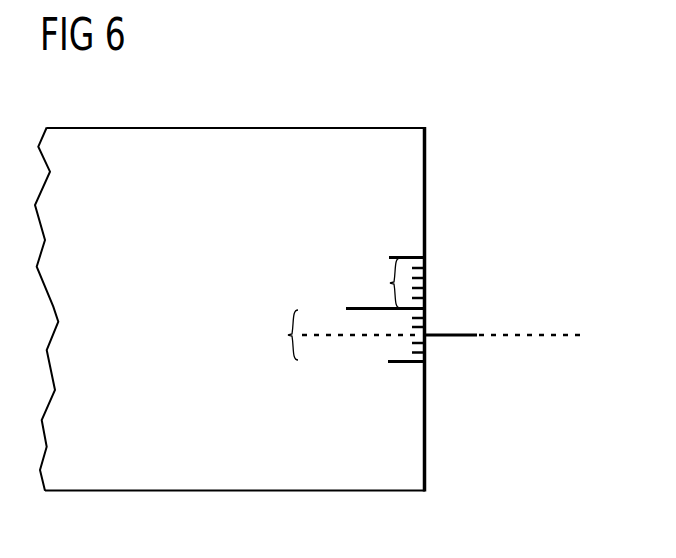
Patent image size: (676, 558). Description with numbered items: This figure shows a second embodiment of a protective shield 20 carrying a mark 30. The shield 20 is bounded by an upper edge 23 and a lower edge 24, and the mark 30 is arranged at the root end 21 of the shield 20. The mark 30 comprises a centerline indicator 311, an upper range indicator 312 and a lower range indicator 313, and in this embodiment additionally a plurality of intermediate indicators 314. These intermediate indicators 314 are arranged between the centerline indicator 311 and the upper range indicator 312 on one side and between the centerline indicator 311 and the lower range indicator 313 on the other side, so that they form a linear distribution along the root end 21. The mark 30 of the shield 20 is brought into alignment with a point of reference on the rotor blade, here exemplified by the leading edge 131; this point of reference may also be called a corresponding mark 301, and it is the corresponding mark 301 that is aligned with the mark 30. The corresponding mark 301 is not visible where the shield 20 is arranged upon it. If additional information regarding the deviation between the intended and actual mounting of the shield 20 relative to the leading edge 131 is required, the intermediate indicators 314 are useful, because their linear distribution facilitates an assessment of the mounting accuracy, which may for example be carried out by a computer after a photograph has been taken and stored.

The shield 20 is at (266, 293).
The root end 21 is at (426, 177).
The upper edge 23 is at (300, 128).
The lower edge 24 is at (303, 491).
The mark 30 is at (348, 311).
The centerline indicator 311 is at (357, 308).
The upper range indicator 312 is at (405, 255).
The lower range indicator 313 is at (407, 363).
The intermediate indicators 314 is at (323, 309).
The corresponding mark 301 is at (460, 335).
The leading edge 131 is at (558, 335).